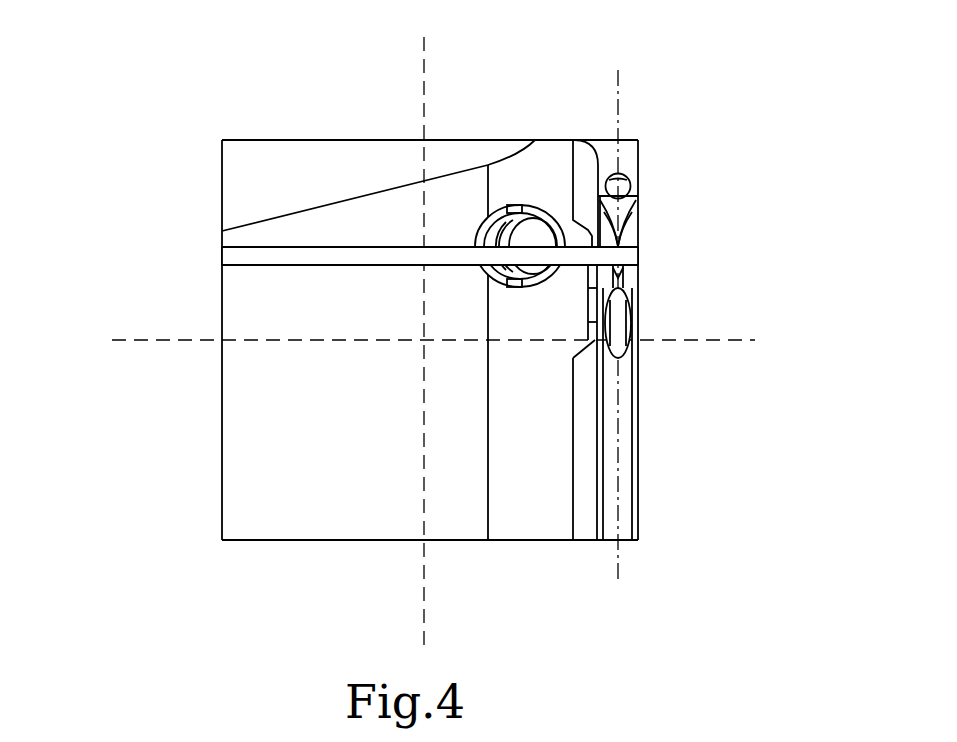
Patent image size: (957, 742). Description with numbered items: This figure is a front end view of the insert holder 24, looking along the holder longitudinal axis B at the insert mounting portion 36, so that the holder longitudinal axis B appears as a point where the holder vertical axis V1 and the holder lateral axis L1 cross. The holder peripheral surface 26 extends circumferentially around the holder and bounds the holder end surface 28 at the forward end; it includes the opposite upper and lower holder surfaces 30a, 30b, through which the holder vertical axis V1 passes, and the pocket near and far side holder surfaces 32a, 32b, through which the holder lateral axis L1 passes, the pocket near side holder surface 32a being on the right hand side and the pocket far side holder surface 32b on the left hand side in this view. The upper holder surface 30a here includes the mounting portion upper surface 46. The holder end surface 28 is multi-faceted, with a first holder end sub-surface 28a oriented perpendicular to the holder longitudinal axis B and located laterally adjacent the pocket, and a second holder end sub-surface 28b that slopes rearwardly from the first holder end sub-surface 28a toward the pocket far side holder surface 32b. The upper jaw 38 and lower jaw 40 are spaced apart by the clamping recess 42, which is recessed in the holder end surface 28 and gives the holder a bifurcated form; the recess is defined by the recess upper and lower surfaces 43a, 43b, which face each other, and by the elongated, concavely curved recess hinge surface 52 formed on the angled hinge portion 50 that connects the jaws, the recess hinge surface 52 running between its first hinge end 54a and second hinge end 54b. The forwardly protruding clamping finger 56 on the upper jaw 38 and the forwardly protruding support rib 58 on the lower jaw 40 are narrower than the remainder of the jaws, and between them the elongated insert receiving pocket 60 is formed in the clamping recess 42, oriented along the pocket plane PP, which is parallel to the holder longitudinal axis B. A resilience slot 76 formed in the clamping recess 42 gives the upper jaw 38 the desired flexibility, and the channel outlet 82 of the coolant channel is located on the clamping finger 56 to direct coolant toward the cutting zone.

The insert holder 24 is at (165, 362).
The holder peripheral surface 26 is at (222, 287).
The holder end surface 28 is at (327, 490).
The first holder end sub-surface 28a is at (552, 396).
The second holder end sub-surface 28b is at (333, 413).
The upper holder surface 30a is at (340, 140).
The lower holder surface 30b is at (463, 540).
The pocket near side holder surface 32a is at (640, 412).
The pocket far side holder surface 32b is at (222, 420).
The insert mounting portion 36 is at (675, 163).
The upper jaw 38 is at (268, 187).
The lower jaw 40 is at (250, 330).
The clamping recess 42 is at (270, 253).
The recess upper surface 43a is at (390, 248).
The recess lower surface 43b is at (437, 263).
The mounting portion upper surface 46 is at (437, 140).
The angled hinge portion 50 is at (668, 263).
The recess hinge surface 52 is at (307, 258).
The first hinge end 54a is at (628, 260).
The second hinge end 54b is at (247, 265).
The clamping finger 56 is at (660, 153).
The support rib 58 is at (677, 462).
The insert receiving pocket 60 is at (652, 287).
The resilience slot 76 is at (351, 255).
The channel outlet 82 is at (632, 188).
The holder longitudinal axis B is at (424, 341).
The holder vertical axis V1 is at (426, 70).
The holder lateral axis L1 is at (722, 340).
The pocket plane PP is at (620, 565).